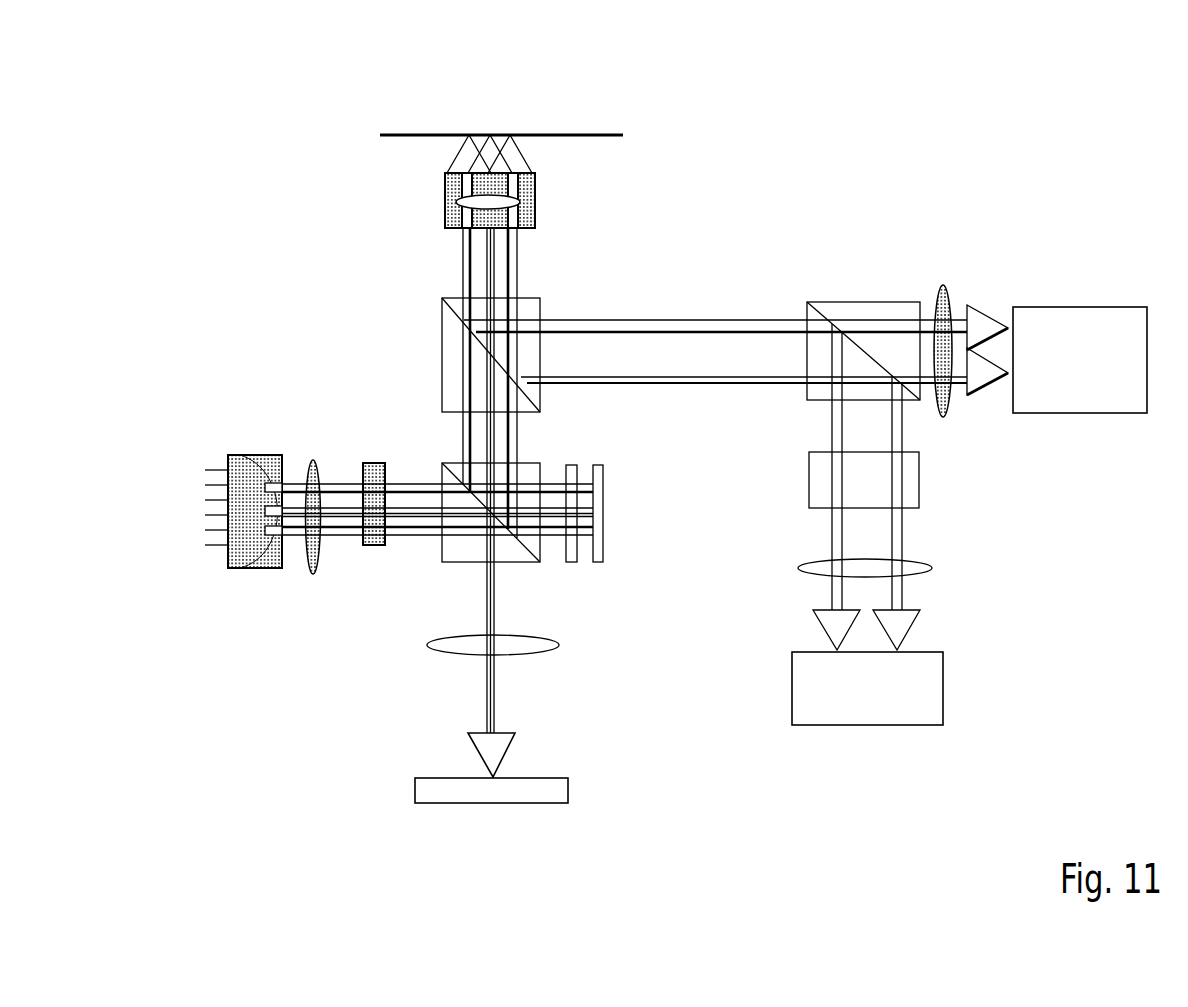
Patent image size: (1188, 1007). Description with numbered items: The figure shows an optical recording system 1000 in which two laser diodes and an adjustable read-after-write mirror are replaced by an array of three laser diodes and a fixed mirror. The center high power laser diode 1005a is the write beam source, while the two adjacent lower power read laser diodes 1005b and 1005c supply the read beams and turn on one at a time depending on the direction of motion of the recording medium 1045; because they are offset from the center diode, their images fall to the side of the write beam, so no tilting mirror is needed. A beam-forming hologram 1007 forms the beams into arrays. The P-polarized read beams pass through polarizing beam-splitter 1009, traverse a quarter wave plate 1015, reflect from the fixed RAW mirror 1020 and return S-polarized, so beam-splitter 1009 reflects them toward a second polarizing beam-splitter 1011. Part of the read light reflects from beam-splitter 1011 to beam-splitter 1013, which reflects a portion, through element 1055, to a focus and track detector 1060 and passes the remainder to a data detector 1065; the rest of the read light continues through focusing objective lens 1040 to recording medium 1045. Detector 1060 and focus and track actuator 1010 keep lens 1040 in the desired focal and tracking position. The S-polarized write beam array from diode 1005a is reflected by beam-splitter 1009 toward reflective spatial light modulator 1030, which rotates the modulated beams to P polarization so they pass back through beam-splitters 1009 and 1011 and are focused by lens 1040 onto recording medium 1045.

The optical recording system 1000 is at (972, 75).
The center high power laser diode 1005a is at (262, 508).
The read laser diode 1005b is at (270, 484).
The read laser diode 1005c is at (268, 533).
The beam-forming hologram 1007 is at (377, 546).
The polarizing beam-splitter 1009 is at (442, 470).
The focus and track actuator 1010 is at (445, 200).
The polarizing beam-splitter 1011 is at (442, 332).
The beam-splitter 1013 is at (865, 312).
The quarter wave plate 1015 is at (573, 463).
The fixed RAW mirror 1020 is at (598, 562).
The reflective spatial light modulator 1030 is at (452, 803).
The focusing objective lens 1040 is at (535, 200).
The recording medium 1045 is at (413, 135).
The filter 1055 is at (919, 473).
The focus and track detector 1060 is at (867, 688).
The data detector 1065 is at (1080, 360).